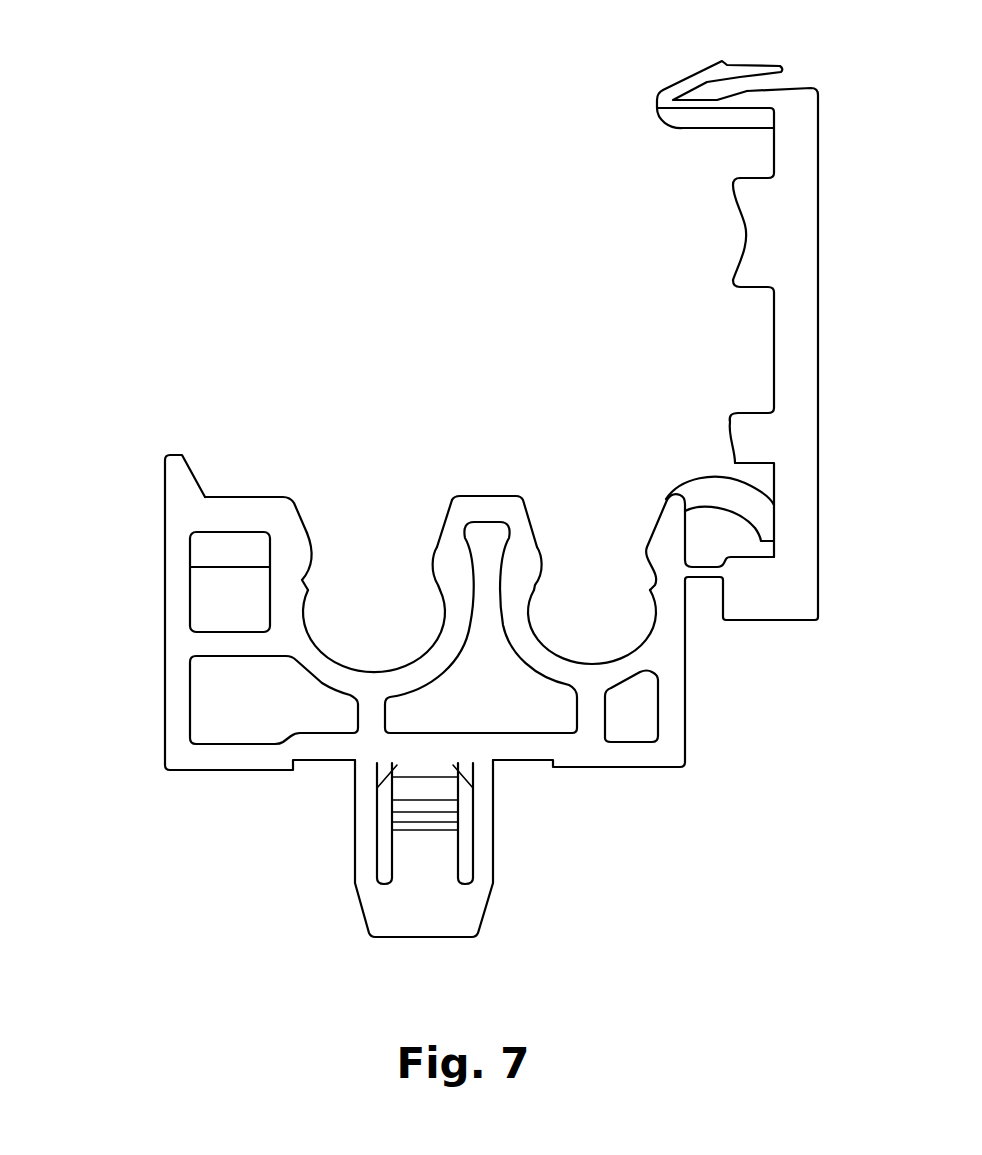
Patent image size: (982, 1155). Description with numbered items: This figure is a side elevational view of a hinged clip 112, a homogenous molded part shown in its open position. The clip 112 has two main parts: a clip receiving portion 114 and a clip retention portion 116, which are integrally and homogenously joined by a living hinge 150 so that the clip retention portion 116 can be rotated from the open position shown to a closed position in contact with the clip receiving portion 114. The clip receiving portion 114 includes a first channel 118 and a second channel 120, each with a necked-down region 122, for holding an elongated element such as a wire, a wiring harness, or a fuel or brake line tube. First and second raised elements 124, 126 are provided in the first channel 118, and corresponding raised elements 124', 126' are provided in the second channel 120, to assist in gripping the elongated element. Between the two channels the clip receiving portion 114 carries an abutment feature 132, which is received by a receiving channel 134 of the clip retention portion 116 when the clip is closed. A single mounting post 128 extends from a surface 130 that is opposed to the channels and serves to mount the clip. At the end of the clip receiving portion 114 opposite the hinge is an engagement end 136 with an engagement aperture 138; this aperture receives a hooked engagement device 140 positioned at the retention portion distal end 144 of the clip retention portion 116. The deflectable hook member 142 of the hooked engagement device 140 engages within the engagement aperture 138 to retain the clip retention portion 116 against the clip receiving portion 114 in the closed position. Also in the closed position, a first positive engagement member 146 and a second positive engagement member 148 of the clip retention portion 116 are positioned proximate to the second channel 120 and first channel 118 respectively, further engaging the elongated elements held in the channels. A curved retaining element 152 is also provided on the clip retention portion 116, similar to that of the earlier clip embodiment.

The clip 112 is at (360, 343).
The clip receiving portion 114 is at (173, 627).
The clip retention portion 116 is at (807, 210).
The first channel 118 is at (347, 663).
The second channel 120 is at (572, 655).
The necked-down region 122 is at (437, 543).
The first raised element 124 is at (336, 557).
The first raised element 124' is at (564, 544).
The second raised element 126 is at (412, 565).
The second raised element 126' is at (629, 546).
The mounting post 128 is at (480, 890).
The surface 130 is at (595, 768).
The abutment feature 132 is at (482, 496).
The receiving channel 134 is at (752, 333).
The engagement end 136 is at (252, 511).
The engagement aperture 138 is at (230, 553).
The hooked engagement device 140 is at (697, 118).
The deflectable hook member 142 is at (712, 68).
The retention portion distal end 144 is at (800, 122).
The first positive engagement member 146 is at (732, 423).
The second positive engagement member 148 is at (747, 260).
The living hinge 150 is at (698, 572).
The curved retaining element 152 is at (705, 482).